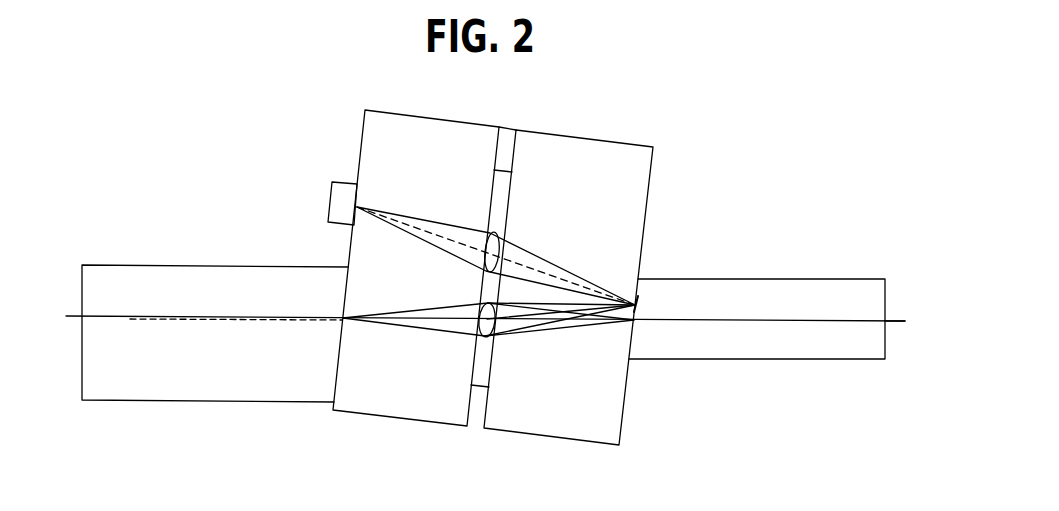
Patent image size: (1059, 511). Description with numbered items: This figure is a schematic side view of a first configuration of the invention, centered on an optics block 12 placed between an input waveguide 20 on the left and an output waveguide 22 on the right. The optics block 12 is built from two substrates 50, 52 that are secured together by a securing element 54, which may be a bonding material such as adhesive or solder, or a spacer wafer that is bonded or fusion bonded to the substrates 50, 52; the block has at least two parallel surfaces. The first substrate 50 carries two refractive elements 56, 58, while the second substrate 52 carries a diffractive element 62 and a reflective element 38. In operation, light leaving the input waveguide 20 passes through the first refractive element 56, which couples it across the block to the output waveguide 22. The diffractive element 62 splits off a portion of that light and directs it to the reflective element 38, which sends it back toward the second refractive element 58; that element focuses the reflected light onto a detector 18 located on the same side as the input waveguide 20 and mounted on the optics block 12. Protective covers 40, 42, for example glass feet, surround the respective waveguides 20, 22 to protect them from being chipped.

The optics block 12 is at (494, 279).
The detector 18 is at (332, 195).
The input waveguide 20 is at (66, 316).
The output waveguide 22 is at (897, 320).
The reflective element 38 is at (640, 298).
The protective cover 40 is at (120, 275).
The protective cover 42 is at (755, 278).
The first substrate 50 is at (408, 115).
The second substrate 52 is at (608, 137).
The securing element 54 is at (477, 428).
The first refractive element 56 is at (480, 338).
The second refractive element 58 is at (490, 232).
The diffractive element 62 is at (483, 297).